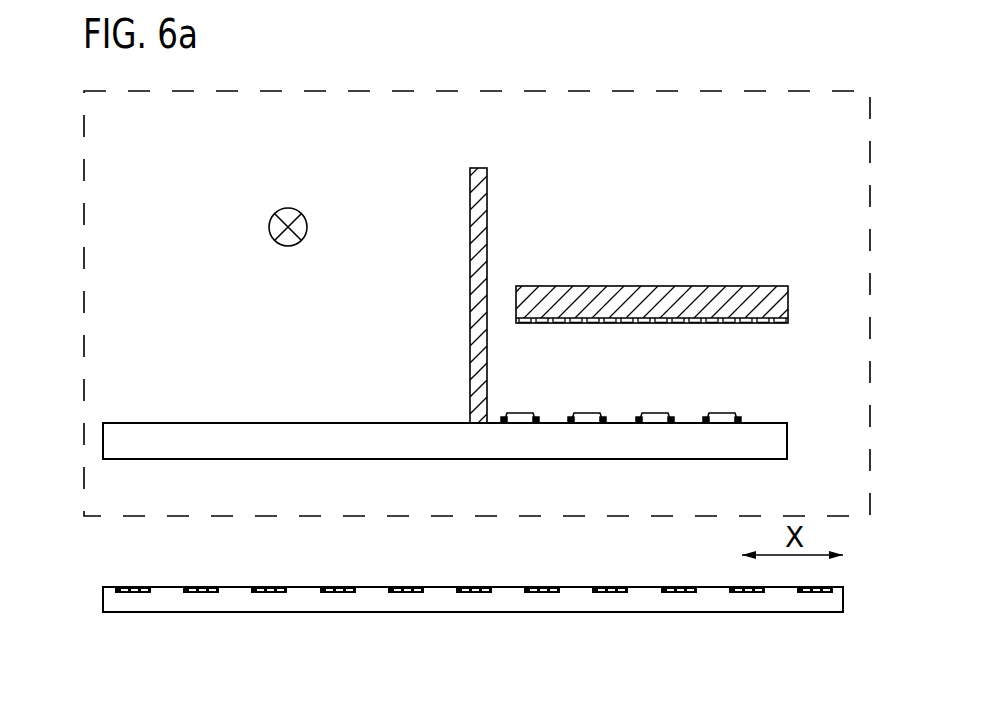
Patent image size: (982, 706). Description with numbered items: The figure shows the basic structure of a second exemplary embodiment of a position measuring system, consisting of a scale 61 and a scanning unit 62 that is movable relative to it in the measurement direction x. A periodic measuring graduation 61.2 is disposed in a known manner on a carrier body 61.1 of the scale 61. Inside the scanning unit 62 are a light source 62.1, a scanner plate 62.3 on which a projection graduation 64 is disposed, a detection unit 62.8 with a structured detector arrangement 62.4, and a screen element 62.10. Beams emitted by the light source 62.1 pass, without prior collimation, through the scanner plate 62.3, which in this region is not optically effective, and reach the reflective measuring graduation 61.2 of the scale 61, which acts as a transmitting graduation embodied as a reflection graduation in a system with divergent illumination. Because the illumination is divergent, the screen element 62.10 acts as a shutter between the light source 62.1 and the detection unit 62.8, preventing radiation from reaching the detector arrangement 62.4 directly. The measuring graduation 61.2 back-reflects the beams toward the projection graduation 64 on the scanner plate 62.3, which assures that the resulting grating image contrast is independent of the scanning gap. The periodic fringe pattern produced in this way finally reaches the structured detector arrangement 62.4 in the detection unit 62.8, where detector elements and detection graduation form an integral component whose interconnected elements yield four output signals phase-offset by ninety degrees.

The scanning unit 62 is at (80, 435).
The light source 62.1 is at (270, 230).
The screen element 62.10 is at (480, 225).
The detection unit 62.8 is at (789, 305).
The structured detector arrangement 62.4 is at (608, 323).
The scanner plate 62.3 is at (737, 442).
The projection graduation 64 is at (688, 404).
The scale 61 is at (463, 609).
The carrier body 61.1 is at (372, 600).
The measuring graduation 61.2 is at (168, 584).